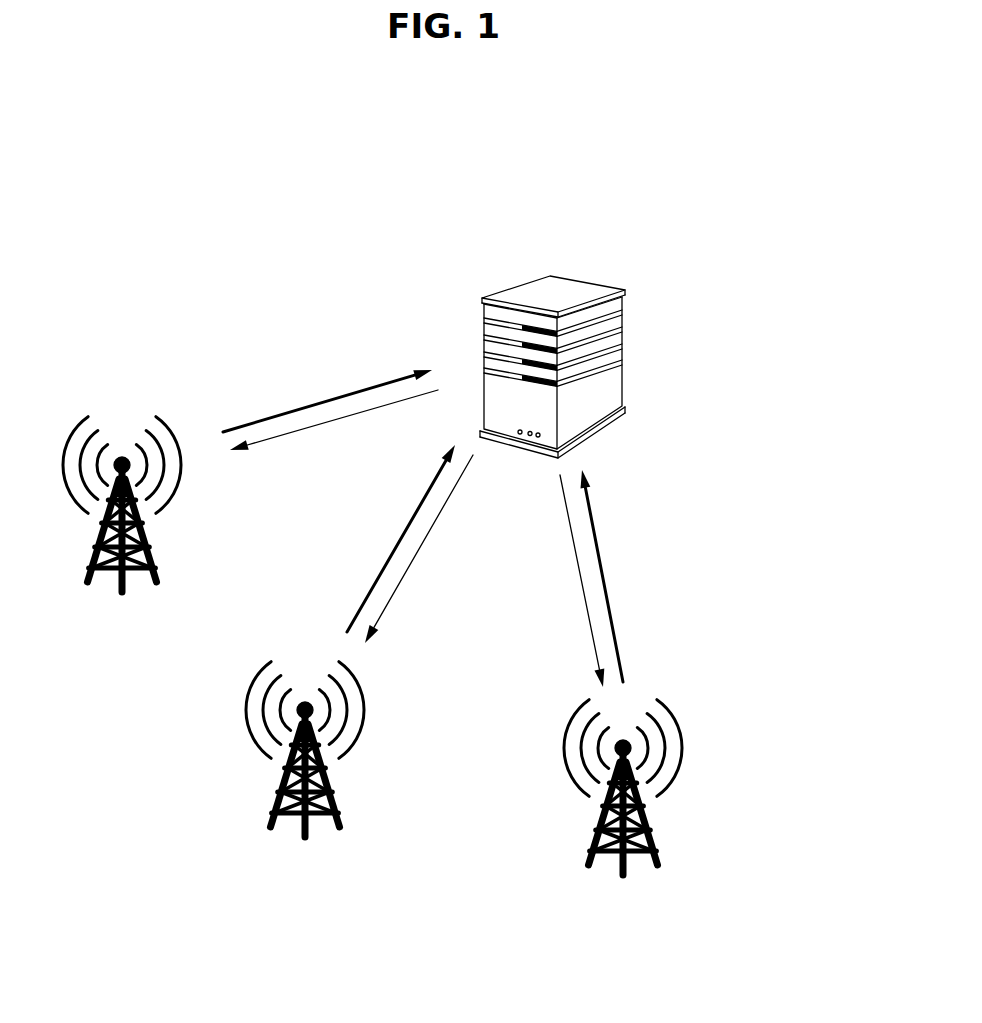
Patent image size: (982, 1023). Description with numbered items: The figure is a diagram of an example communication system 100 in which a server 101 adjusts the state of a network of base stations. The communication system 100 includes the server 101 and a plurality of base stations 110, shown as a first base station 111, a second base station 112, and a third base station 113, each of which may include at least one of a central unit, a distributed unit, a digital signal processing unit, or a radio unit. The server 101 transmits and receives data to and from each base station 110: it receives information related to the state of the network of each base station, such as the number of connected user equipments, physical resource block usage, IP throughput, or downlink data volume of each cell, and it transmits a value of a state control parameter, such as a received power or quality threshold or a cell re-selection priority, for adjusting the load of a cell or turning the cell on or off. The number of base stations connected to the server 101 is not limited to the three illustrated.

The communication system 100 is at (442, 434).
The server 101 is at (625, 377).
The plurality of base stations 110 is at (820, 647).
The first base station 111 is at (153, 548).
The second base station 112 is at (333, 792).
The third base station 113 is at (653, 832).